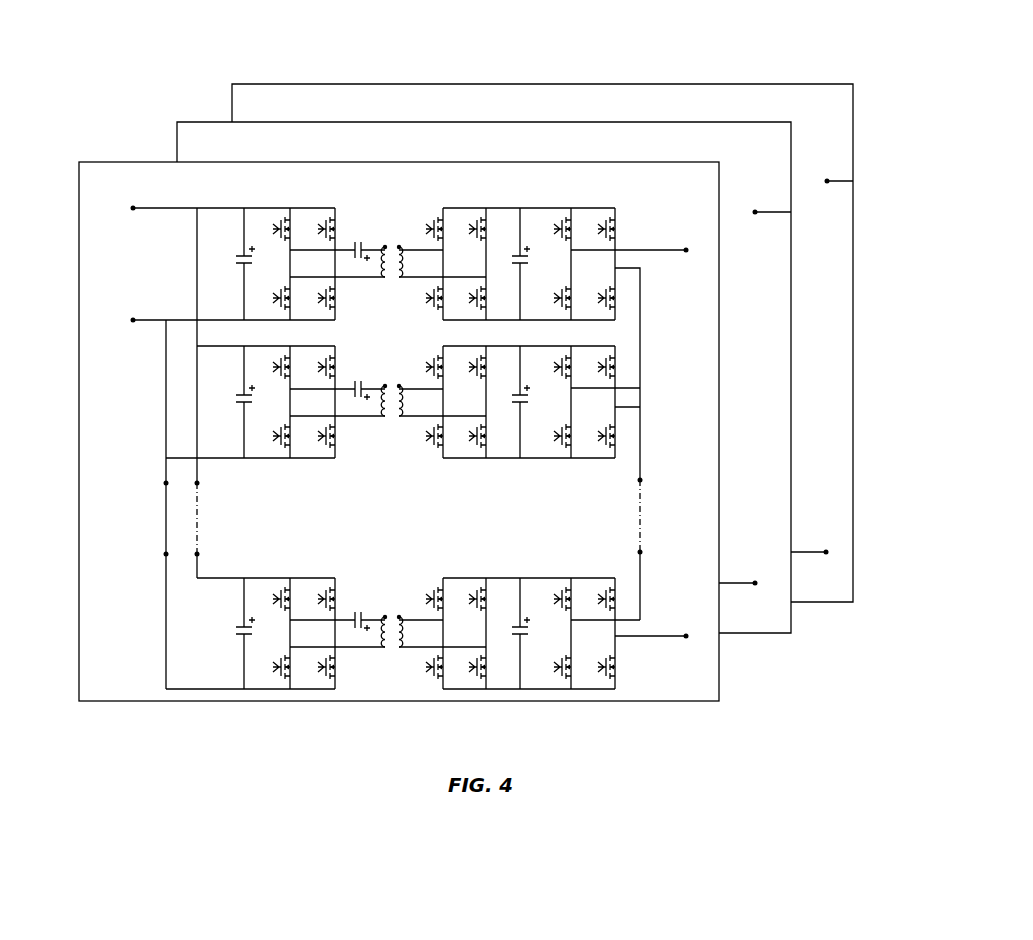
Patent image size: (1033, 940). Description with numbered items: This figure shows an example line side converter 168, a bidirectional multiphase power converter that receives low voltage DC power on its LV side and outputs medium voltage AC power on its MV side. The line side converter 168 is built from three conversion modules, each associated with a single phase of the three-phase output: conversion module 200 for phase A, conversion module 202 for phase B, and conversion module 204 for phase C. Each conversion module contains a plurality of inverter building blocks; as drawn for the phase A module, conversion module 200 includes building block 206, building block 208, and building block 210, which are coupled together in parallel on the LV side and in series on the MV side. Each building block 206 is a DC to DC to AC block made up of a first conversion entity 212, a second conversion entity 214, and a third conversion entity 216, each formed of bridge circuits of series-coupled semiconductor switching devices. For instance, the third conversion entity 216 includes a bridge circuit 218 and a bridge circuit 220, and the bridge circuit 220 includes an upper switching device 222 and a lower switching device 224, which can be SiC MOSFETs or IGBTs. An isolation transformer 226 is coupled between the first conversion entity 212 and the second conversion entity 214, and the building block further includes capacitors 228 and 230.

The line side converter 168 is at (678, 45).
The conversion module 200 is at (77, 190).
The conversion module 202 is at (200, 122).
The conversion module 204 is at (252, 84).
The building block 206 is at (173, 268).
The building block 208 is at (318, 476).
The building block 210 is at (318, 562).
The first conversion entity 212 is at (338, 203).
The second conversion entity 214 is at (493, 203).
The third conversion entity 216 is at (618, 203).
The bridge circuit 218 is at (552, 252).
The bridge circuit 220 is at (616, 243).
The upper switching device 222 is at (614, 222).
The lower switching device 224 is at (618, 290).
The isolation transformer 226 is at (383, 280).
The capacitor 228 is at (241, 264).
The capacitor 230 is at (523, 264).